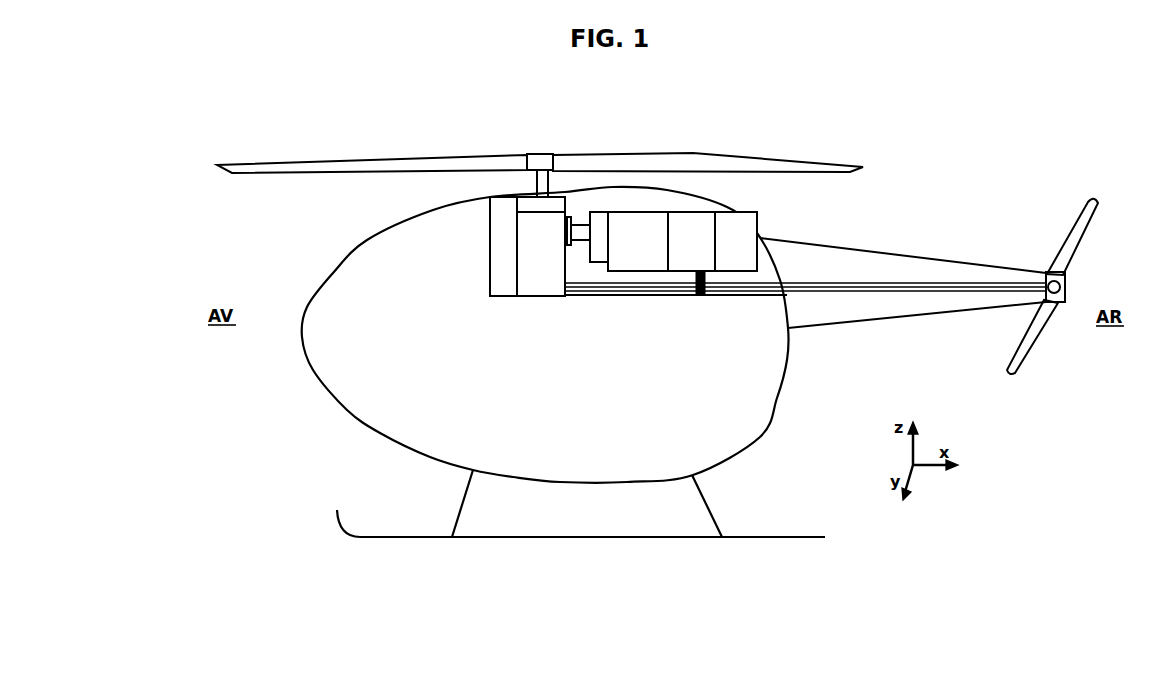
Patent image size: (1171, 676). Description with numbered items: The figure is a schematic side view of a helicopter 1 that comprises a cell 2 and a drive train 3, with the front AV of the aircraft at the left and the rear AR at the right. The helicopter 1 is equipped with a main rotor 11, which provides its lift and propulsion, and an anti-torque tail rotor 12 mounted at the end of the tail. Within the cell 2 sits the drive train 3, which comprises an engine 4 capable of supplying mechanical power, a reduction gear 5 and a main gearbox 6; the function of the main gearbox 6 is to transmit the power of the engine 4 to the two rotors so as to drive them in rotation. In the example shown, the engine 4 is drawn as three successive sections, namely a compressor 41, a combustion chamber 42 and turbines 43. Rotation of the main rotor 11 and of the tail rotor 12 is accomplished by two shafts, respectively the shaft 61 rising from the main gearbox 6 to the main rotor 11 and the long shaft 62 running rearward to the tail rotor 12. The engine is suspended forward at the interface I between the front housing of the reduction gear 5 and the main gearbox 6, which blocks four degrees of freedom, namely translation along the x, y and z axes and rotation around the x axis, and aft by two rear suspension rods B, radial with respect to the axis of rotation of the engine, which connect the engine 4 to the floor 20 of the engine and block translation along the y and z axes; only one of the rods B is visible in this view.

The helicopter 1 is at (298, 250).
The cell 2 is at (347, 333).
The drive train 3 is at (780, 204).
The engine 4 is at (671, 172).
The compressor 41 is at (638, 230).
The combustion chamber 42 is at (690, 230).
The turbines 43 is at (736, 195).
The reduction gear 5 is at (585, 212).
The main gearbox 6 is at (542, 253).
The main rotor shaft 61 is at (533, 178).
The tail rotor shaft 62 is at (912, 285).
The main rotor 11 is at (393, 163).
The anti-torque tail rotor 12 is at (1078, 246).
The floor 20 is at (628, 291).
The rear suspension rod B is at (699, 283).
The interface I is at (572, 212).